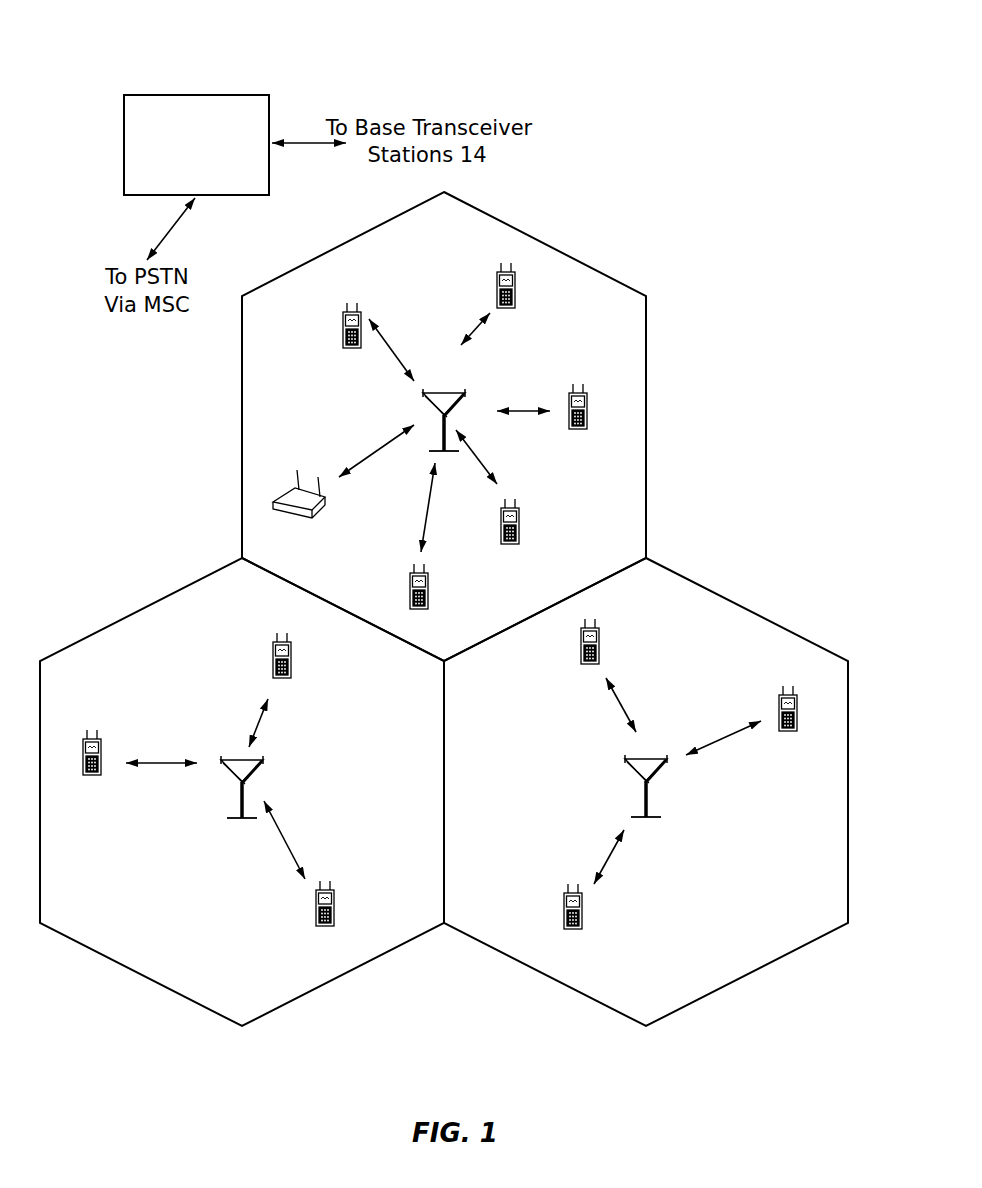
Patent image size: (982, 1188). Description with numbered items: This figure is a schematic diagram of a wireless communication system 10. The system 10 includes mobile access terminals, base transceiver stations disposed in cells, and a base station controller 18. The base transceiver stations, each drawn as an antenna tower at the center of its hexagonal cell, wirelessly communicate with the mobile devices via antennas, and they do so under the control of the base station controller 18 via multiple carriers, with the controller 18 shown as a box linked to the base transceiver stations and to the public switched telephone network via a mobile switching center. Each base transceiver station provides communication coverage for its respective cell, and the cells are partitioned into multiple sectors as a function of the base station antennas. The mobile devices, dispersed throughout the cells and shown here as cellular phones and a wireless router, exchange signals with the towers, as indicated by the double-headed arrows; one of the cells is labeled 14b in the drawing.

The wireless communication system 10 is at (688, 72).
The cell of base transceiver station 14b is at (545, 246).
The base station controller 18 is at (124, 143).